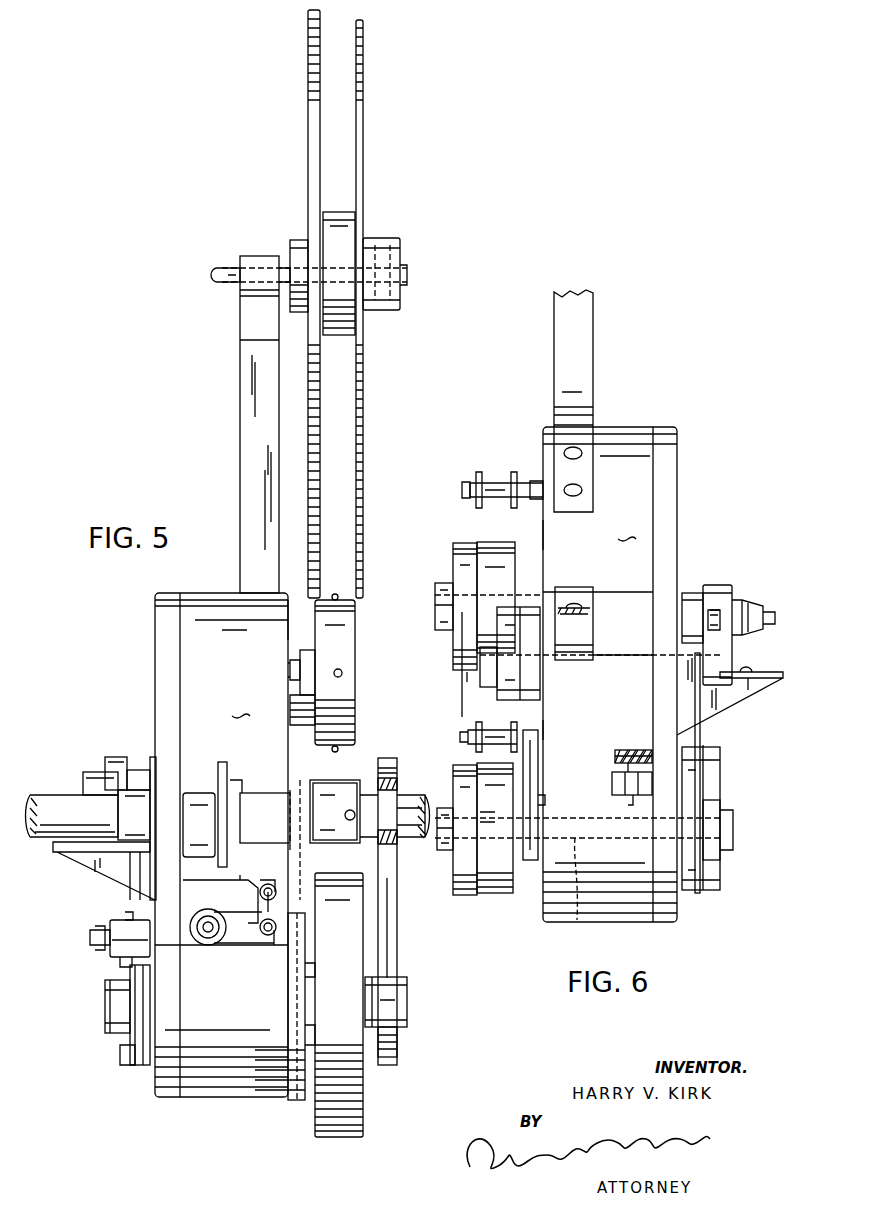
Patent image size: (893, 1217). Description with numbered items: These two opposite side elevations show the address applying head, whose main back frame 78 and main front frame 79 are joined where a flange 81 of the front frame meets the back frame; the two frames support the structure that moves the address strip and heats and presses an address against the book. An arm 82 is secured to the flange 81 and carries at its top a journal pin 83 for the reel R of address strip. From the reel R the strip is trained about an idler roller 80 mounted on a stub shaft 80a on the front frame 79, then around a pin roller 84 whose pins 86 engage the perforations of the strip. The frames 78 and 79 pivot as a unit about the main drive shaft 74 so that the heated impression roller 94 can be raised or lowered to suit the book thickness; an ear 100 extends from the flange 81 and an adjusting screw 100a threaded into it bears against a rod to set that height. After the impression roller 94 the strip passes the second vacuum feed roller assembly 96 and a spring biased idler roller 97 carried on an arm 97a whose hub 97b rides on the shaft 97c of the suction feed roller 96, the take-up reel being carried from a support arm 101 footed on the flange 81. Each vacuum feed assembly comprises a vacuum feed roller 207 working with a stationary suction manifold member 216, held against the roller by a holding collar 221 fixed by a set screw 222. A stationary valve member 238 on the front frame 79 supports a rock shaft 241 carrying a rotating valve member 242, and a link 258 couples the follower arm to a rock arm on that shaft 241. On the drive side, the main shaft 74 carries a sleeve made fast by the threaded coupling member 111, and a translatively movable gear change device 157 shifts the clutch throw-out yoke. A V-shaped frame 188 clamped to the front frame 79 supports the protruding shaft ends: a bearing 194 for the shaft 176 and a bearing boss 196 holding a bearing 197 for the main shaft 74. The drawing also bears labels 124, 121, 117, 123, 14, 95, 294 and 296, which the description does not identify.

In FIG. 5, the reel R is at (363, 152).
In FIG. 5, the journal pin 83 is at (234, 268).
In FIG. 5, the arm 82 is at (240, 448).
In FIG. 6, the arm 82 is at (586, 396).
In FIG. 5, the main back frame 78 is at (165, 698).
In FIG. 6, the main back frame 78 is at (676, 505).
In FIG. 5, the flange 81 is at (241, 706).
In FIG. 6, the flange 81 is at (628, 928).
In FIG. 5, the main front frame 79 is at (290, 610).
In FIG. 6, the main front frame 79 is at (543, 535).
In FIG. 5, the pin roller 84 is at (355, 622).
In FIG. 5, the pins 86 is at (336, 596).
In FIG. 5, the gear change device 157 is at (319, 666).
In FIG. 5, the main drive shaft 74 is at (50, 800).
In FIG. 5, the collar 124 is at (258, 790).
In FIG. 5, the compression coupling member 111 is at (350, 780).
In FIG. 5, the V-shaped frame 188 is at (397, 915).
In FIG. 5, the bearing boss 196 is at (397, 769).
In FIG. 5, the bearing 197 is at (397, 785).
In FIG. 5, the shaft 176 is at (105, 1006).
In FIG. 5, the bearing 194 is at (398, 1054).
In FIG. 5, the heated impression roller 94 is at (355, 1130).
In FIG. 5, the pivot arm 121 is at (257, 913).
In FIG. 5, the pivot pin 117 is at (208, 932).
In FIG. 5, the link 123 is at (253, 888).
In FIG. 6, the idler roller 80 is at (472, 480).
In FIG. 6, the stub shaft 80a is at (462, 490).
In FIG. 6, the suction manifold member 216 is at (455, 543).
In FIG. 6, the vacuum feed roller 207 is at (506, 568).
In FIG. 6, the stationary valve member 238 is at (504, 624).
In FIG. 6, the rotating valve member 242 is at (533, 670).
In FIG. 6, the holding collar 221 is at (475, 822).
In FIG. 6, the support arm 101 is at (588, 639).
In FIG. 6, the web 14 is at (492, 609).
In FIG. 6, the set screw 222 is at (438, 640).
In FIG. 6, the rock shaft 241 is at (467, 682).
In FIG. 6, the upper roller set 95 is at (455, 686).
In FIG. 6, the second vacuum feed roller assembly 96 is at (495, 905).
In FIG. 6, the spring biased idler roller 97 is at (492, 732).
In FIG. 6, the arm 97a is at (538, 775).
In FIG. 6, the hub 97b is at (540, 801).
In FIG. 6, the shaft 97c is at (578, 920).
In FIG. 6, the ear 100 is at (612, 779).
In FIG. 6, the adjusting screw 100a is at (640, 745).
In FIG. 6, the drive unit 294 is at (714, 587).
In FIG. 6, the bracket 296 is at (748, 680).
In FIG. 6, the link 258 is at (700, 730).